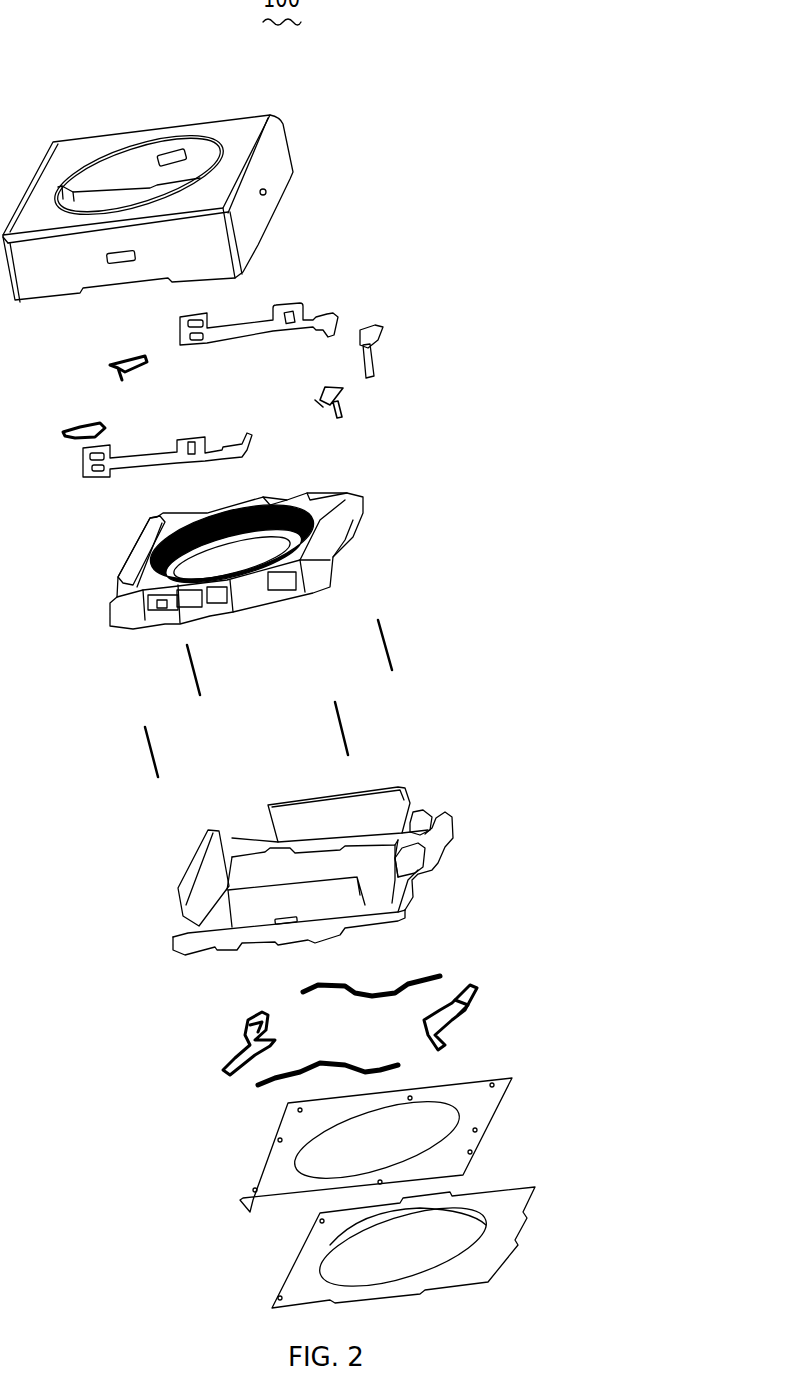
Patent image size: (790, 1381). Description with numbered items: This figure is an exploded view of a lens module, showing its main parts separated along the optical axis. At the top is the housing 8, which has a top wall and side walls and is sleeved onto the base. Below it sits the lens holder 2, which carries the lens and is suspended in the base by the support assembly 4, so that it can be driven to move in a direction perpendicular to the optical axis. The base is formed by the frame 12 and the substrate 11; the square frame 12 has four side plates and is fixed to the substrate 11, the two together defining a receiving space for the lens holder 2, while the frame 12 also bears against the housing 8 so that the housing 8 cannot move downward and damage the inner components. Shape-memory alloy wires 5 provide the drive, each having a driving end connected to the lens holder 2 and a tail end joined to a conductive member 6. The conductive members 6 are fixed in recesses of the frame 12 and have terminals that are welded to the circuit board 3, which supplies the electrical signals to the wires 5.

The housing 8 is at (277, 160).
The lens holder 2 is at (352, 533).
The support assembly 4 is at (388, 645).
The frame 12 is at (450, 824).
The shape-memory alloy wire 5 is at (440, 1003).
The conductive member 6 is at (248, 1020).
The circuit board 3 is at (485, 1123).
The substrate 11 is at (500, 1220).